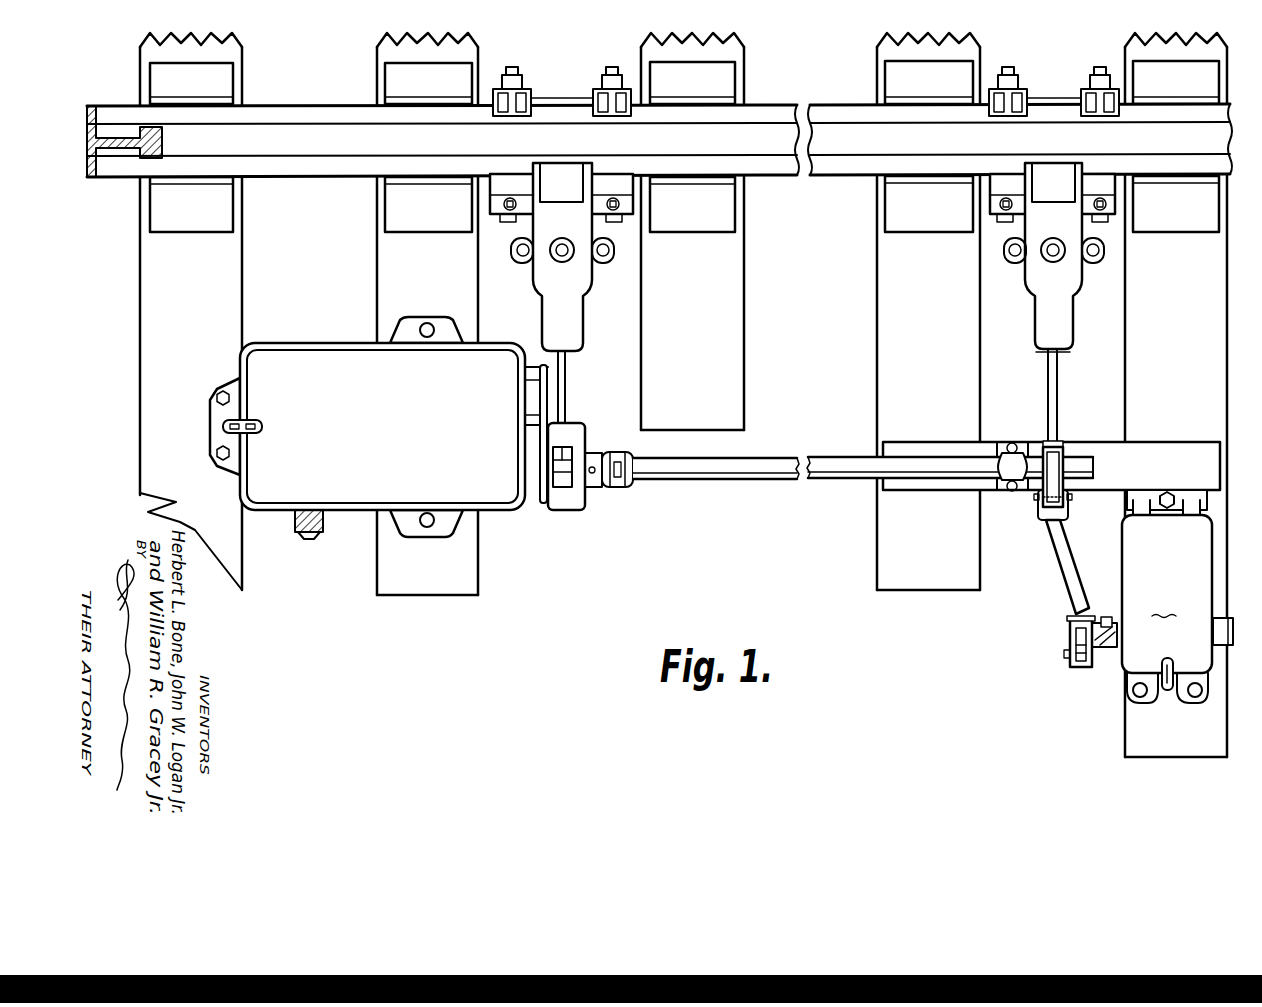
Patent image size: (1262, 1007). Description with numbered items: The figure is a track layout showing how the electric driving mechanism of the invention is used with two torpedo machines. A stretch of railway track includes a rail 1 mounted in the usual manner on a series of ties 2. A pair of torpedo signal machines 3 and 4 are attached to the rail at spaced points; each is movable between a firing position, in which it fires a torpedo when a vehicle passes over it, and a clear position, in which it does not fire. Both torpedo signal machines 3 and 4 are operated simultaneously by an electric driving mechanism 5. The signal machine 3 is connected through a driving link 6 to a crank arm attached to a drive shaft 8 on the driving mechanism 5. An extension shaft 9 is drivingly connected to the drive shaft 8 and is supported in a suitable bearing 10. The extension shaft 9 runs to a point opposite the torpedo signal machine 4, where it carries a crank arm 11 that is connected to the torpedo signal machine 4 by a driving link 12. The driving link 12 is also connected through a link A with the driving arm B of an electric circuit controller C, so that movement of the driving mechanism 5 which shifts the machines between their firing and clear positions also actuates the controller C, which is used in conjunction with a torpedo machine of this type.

The rail 1 is at (322, 143).
The ties 2 is at (385, 268).
The torpedo signal machine 3 is at (546, 282).
The torpedo signal machine 4 is at (1041, 278).
The electric driving mechanism 5 is at (318, 362).
The driving link 6 is at (565, 390).
The drive shaft 8 is at (619, 487).
The extension shaft 9 is at (722, 465).
The bearing 10 is at (1016, 462).
The crank arm 11 is at (1062, 486).
The driving link 12 is at (1058, 398).
The link A is at (1063, 563).
The driving arm B is at (1106, 650).
The electric circuit controller C is at (1177, 596).